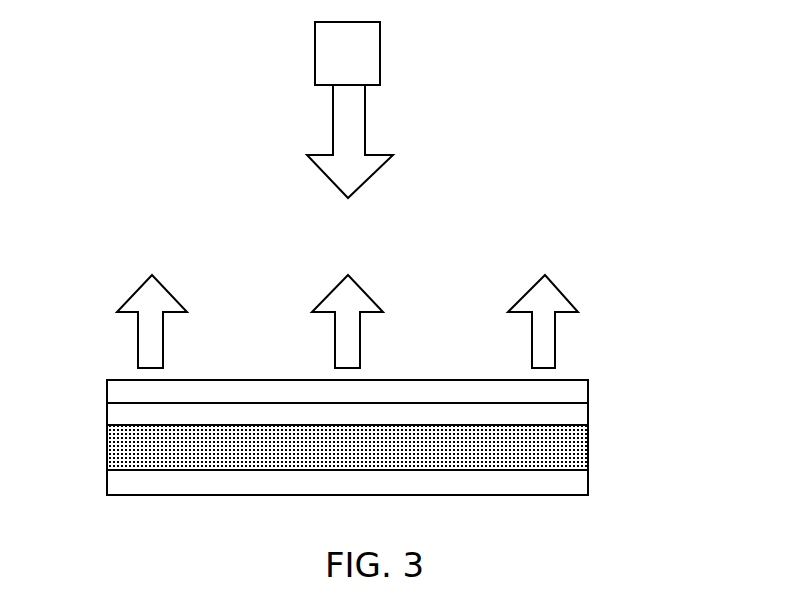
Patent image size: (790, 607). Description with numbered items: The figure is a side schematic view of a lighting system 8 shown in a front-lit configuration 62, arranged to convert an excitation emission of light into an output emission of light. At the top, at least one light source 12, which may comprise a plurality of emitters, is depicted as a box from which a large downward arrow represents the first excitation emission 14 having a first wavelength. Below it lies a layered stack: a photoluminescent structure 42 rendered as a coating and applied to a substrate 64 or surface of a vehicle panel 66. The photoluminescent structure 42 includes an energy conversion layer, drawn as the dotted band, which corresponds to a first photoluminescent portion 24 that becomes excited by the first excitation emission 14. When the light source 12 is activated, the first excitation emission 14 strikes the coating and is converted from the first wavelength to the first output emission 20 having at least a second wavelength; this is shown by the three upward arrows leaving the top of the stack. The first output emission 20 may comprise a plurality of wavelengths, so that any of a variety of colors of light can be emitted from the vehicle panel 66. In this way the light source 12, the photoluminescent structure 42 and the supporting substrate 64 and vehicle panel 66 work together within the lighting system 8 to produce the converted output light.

The lighting system 8 is at (131, 74).
The light source 12 is at (347, 53).
The first excitation emission 14 is at (342, 121).
The front-lit configuration 62 is at (516, 169).
The first output emission 20 is at (157, 338).
The photoluminescent structure 42 is at (599, 412).
The first photoluminescent portion 24 is at (578, 450).
The substrate 64 is at (177, 488).
The vehicle panel 66 is at (99, 491).